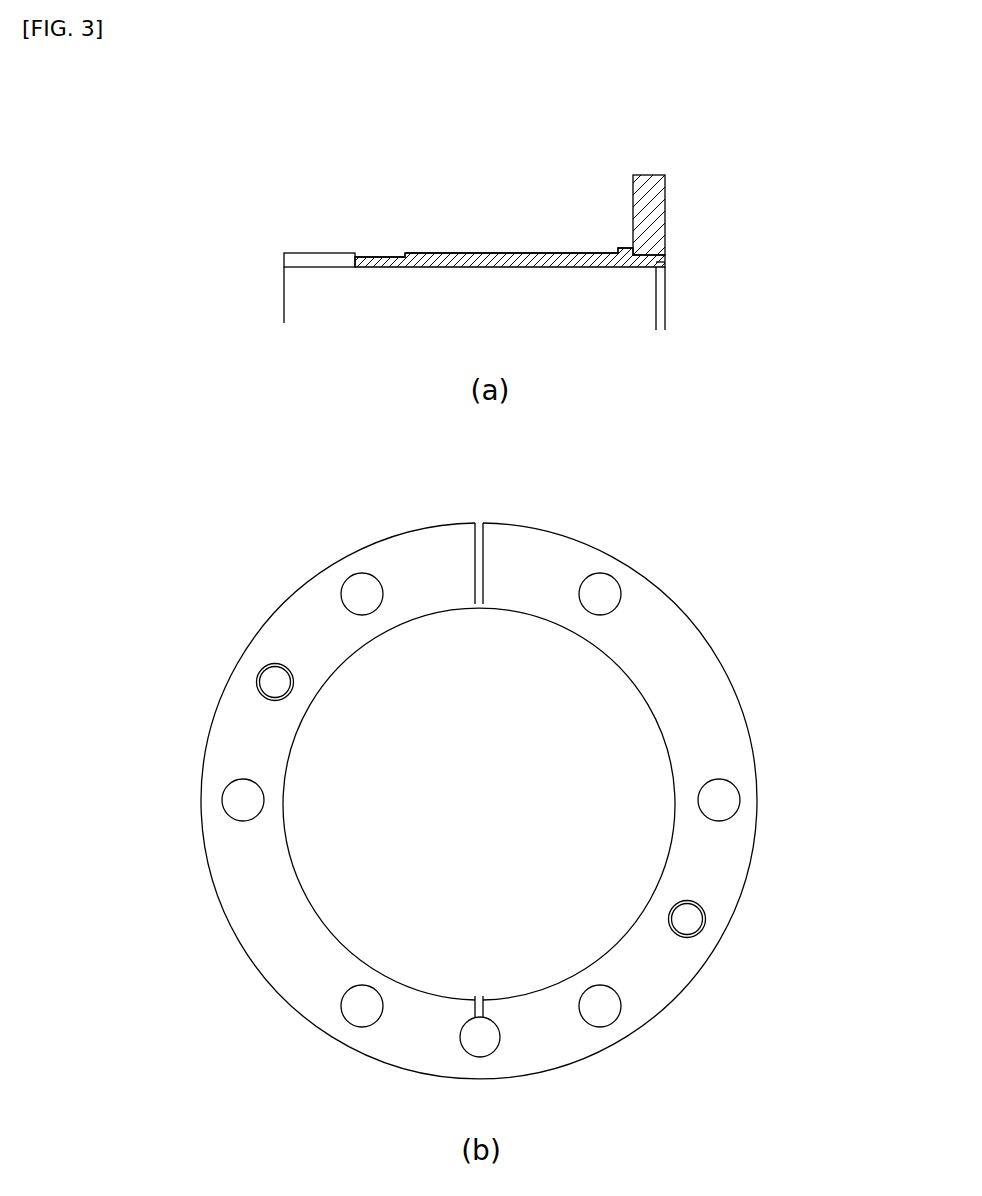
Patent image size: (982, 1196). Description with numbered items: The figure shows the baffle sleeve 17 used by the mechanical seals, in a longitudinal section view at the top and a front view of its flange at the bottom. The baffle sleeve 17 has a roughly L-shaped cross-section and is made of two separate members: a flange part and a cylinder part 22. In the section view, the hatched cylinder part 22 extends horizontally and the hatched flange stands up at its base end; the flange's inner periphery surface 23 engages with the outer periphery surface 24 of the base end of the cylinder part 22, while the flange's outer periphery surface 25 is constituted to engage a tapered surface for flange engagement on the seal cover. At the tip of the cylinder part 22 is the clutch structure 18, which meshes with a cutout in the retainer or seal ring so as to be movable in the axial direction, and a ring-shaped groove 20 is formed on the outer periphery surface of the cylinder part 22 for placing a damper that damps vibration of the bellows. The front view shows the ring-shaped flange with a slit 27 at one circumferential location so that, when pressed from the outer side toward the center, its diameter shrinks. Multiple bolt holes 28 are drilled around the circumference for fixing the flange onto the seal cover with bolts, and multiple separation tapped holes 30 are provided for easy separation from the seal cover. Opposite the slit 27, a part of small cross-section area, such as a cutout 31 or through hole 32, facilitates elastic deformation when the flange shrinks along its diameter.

The baffle sleeve 17 is at (480, 253).
The clutch structure 18 is at (322, 263).
The ring-shaped groove 20 is at (372, 258).
The cylinder part 22 is at (548, 270).
The inner periphery surface 23 is at (666, 265).
The outer periphery surface 24 is at (640, 256).
The outer periphery surface 25 is at (640, 175).
The slit 27 is at (479, 523).
The bolt holes 28 is at (355, 597).
The separation tapped holes 30 is at (275, 688).
The cutout 31 is at (477, 1000).
The through hole 32 is at (482, 1037).